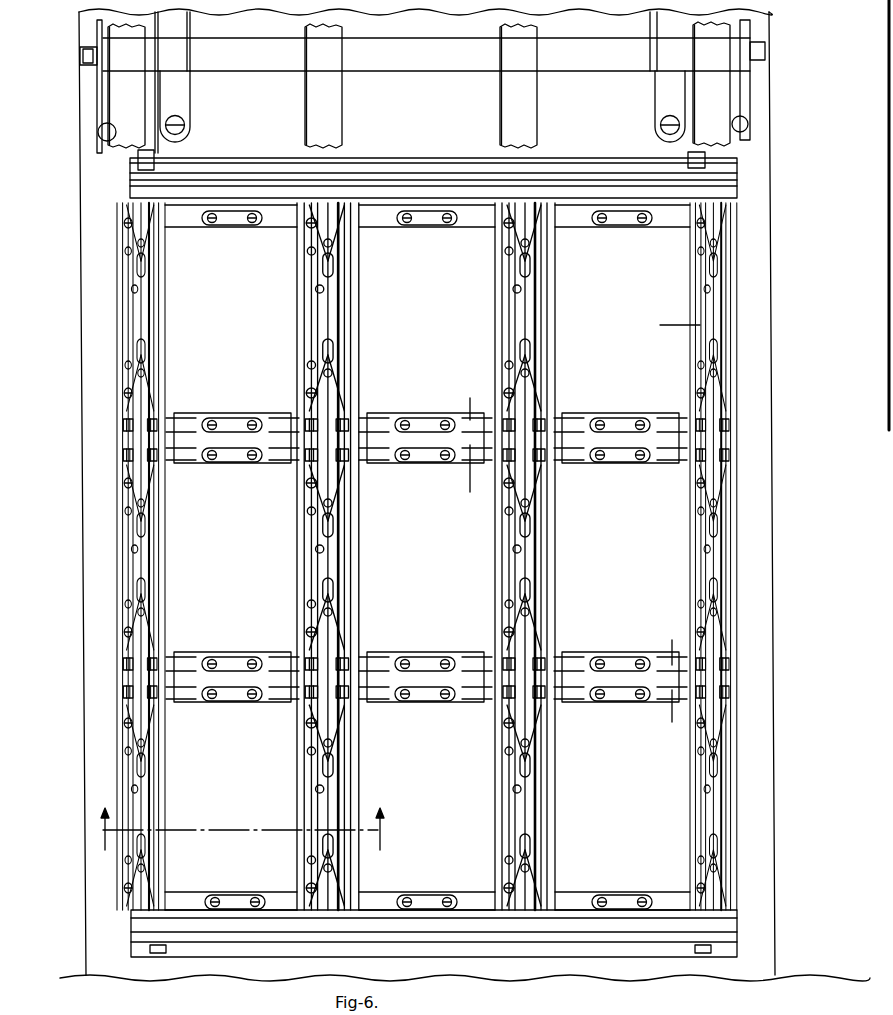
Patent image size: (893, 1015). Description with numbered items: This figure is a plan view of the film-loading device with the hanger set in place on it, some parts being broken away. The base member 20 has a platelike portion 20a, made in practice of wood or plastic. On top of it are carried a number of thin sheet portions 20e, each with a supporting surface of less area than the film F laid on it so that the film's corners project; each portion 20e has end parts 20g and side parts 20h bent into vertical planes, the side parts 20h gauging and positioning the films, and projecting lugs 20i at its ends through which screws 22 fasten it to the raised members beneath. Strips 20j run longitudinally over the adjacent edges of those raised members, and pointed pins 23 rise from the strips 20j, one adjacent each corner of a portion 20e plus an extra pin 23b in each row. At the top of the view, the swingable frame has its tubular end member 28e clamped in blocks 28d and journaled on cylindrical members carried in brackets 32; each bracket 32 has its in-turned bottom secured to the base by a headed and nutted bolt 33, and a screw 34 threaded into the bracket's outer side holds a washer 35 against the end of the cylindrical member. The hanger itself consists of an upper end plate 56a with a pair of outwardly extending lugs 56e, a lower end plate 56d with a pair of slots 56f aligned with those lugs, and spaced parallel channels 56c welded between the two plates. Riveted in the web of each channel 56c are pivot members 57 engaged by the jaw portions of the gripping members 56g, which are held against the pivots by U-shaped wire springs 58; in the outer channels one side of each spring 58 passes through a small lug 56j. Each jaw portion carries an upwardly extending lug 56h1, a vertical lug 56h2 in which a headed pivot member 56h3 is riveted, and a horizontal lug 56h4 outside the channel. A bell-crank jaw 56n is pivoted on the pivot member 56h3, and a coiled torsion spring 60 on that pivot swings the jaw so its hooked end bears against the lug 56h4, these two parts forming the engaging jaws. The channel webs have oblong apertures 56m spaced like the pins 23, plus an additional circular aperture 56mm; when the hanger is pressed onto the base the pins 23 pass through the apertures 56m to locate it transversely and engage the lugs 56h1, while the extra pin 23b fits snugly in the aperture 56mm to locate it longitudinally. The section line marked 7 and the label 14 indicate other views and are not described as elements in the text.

The support bar 14 is at (162, 28).
The washer 35 is at (97, 45).
The screw 34 is at (88, 58).
The block 28d is at (115, 95).
The end member 28e is at (480, 72).
The bracket 32 is at (192, 100).
The bolt 33 is at (105, 127).
The end plate 56a is at (410, 164).
The lug 56e is at (138, 155).
The end plate 56d is at (735, 922).
The slot 56f is at (158, 953).
The channel 56c is at (148, 570).
The end part 20g is at (386, 412).
The lug 20i is at (432, 412).
The section line 7- 7 is at (246, 820).
The film F is at (776, 320).
The gripping member 56g is at (158, 233).
The pin 23 is at (538, 232).
The additional pin 23b is at (133, 290).
The pivot member 57 is at (320, 260).
The spring 58 is at (320, 279).
The side part 20h is at (500, 285).
The lug 56j is at (730, 387).
The torsion spring 60 is at (166, 415).
The screw 22 is at (390, 435).
The strip 20j is at (118, 440).
The platelike portion 20a is at (86, 483).
The film supporting portion 20e is at (614, 197).
The horizontally projecting lug 56h4 is at (168, 469).
The pivot member 56h3 is at (355, 465).
The lug 56h1 is at (726, 222).
The vertically extending lug 56h2 is at (310, 690).
The aperture 56m is at (723, 450).
The jaw 56n is at (160, 632).
The additional circular aperture 56mm is at (335, 828).
The base member 20 is at (767, 708).